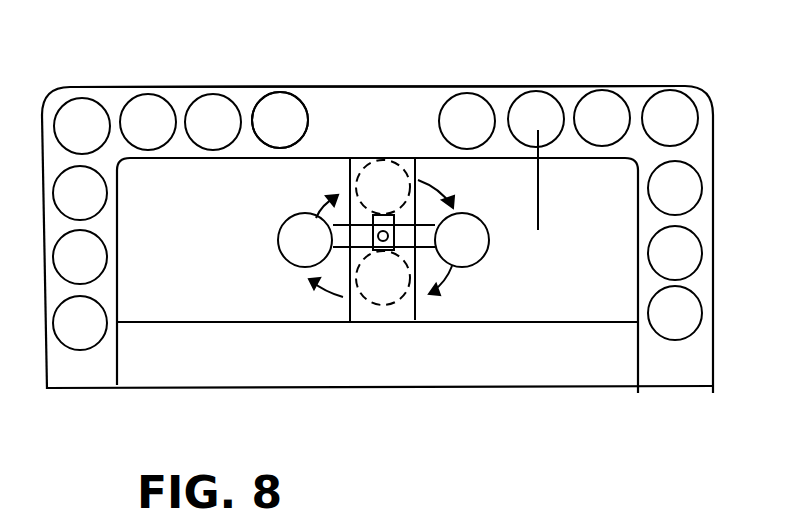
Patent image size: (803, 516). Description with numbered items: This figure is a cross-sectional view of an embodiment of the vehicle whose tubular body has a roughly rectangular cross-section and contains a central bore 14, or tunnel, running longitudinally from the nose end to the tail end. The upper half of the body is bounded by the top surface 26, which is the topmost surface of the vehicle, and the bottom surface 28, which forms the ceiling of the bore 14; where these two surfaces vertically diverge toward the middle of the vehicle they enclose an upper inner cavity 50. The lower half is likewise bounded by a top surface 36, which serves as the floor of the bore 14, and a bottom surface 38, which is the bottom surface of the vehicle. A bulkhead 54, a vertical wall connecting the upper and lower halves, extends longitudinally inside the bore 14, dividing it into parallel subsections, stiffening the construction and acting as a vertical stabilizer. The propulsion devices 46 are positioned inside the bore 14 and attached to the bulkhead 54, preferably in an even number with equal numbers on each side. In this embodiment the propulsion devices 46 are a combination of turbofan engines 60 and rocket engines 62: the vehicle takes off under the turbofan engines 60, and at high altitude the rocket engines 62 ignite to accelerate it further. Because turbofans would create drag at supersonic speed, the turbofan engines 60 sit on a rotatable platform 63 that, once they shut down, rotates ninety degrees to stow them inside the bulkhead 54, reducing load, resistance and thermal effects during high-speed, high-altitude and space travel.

The central bore 14 is at (568, 287).
The top surface of the upper half 26 is at (233, 87).
The bottom surface of the upper half 28 is at (197, 158).
The top surface of the lower half 36 is at (175, 322).
The bottom surface of the lower half 38 is at (425, 387).
The propulsion device 46 is at (466, 238).
The upper inner cavity 50 is at (353, 115).
The bulkhead 54 is at (365, 312).
The turbofan engine 60 is at (292, 237).
The rocket engine 62 is at (277, 110).
The rotatable platform 63 is at (407, 237).